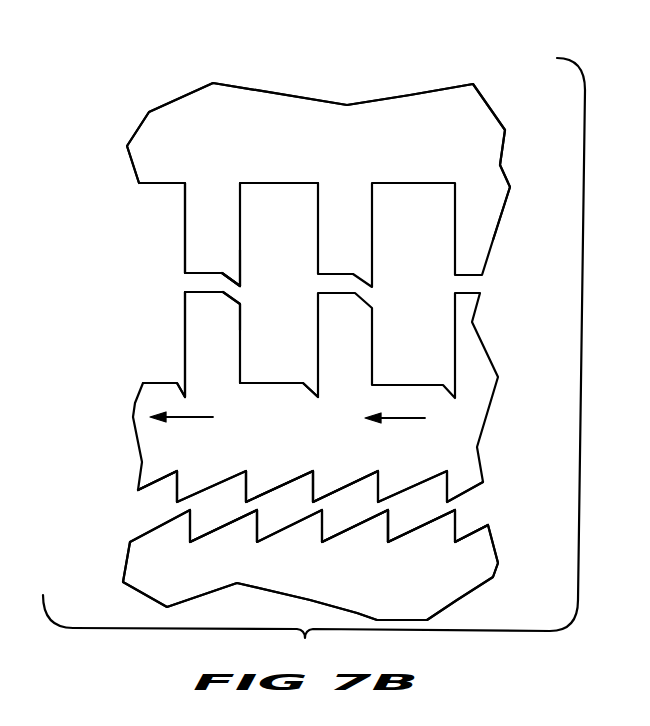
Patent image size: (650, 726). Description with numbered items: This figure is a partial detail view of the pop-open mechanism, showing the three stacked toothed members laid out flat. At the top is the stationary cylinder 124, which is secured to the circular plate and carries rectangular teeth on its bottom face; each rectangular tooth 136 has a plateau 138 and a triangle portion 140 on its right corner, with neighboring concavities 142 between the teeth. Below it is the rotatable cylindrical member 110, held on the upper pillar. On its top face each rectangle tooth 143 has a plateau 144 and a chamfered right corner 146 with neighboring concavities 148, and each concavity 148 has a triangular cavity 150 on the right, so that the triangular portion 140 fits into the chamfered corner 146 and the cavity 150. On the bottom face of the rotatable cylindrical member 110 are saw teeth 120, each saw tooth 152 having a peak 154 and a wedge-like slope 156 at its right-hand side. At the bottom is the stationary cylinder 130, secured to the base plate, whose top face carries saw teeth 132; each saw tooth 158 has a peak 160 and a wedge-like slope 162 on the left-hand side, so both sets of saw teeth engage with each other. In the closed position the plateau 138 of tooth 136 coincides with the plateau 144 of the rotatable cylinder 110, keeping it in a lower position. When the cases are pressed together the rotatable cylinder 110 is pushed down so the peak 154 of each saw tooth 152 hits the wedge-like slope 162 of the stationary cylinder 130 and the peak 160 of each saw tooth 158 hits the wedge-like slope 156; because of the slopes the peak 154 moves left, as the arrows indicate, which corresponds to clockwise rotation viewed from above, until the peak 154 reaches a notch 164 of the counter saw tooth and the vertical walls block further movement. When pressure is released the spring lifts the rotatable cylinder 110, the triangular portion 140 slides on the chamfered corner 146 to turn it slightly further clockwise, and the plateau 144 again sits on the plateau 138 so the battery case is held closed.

The rotatable cylindrical member 110 is at (458, 421).
The saw teeth 120 is at (158, 499).
The stationary cylinder 124 is at (210, 118).
The stationary cylinder 130 is at (155, 555).
The saw teeth 132 is at (475, 529).
The rectangular tooth 136 is at (205, 227).
The plateau 138 is at (203, 279).
The triangular portion 140 is at (243, 283).
The concavities 142 is at (260, 184).
The rectangle tooth 143 is at (203, 355).
The plateau 144 is at (203, 290).
The chamfered right corner 146 is at (240, 306).
The concavities 148 is at (285, 383).
The triangular cavity 150 is at (184, 390).
The saw tooth 152 is at (315, 491).
The peak 154 is at (297, 508).
The wedge-like slope 156 is at (342, 496).
The saw tooth 158 is at (392, 513).
The peak 160 is at (390, 542).
The wedge-like slope 162 is at (346, 527).
The notch 164 is at (266, 527).